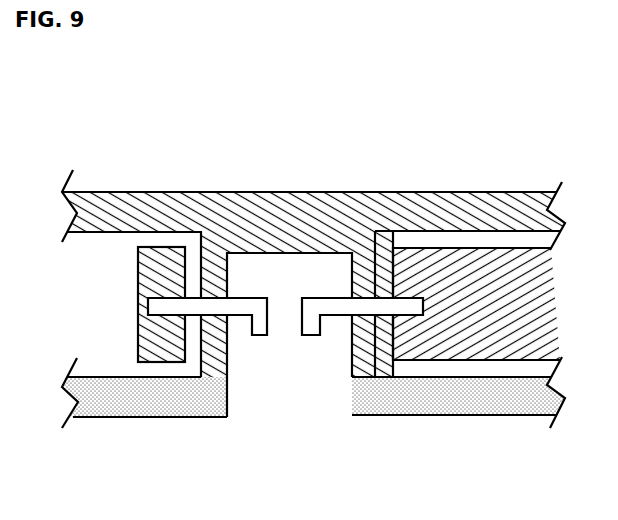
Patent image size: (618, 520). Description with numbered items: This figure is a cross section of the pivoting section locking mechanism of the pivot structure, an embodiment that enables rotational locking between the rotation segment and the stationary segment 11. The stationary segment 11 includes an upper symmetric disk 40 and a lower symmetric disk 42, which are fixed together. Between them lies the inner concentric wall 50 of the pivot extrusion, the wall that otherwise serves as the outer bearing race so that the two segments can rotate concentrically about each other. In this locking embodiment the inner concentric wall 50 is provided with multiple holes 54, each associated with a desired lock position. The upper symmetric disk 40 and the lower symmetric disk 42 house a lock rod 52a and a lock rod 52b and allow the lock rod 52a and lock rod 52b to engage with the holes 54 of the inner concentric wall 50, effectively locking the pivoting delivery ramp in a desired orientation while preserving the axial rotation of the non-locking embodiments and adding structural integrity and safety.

The stationary segment 11 is at (138, 205).
The upper symmetric disk 40 is at (483, 208).
The lower symmetric disk 42 is at (510, 398).
The inner concentric wall 50 is at (393, 365).
The lock rod 52a is at (263, 337).
The lock rod 52b is at (313, 337).
The holes 54 is at (172, 298).